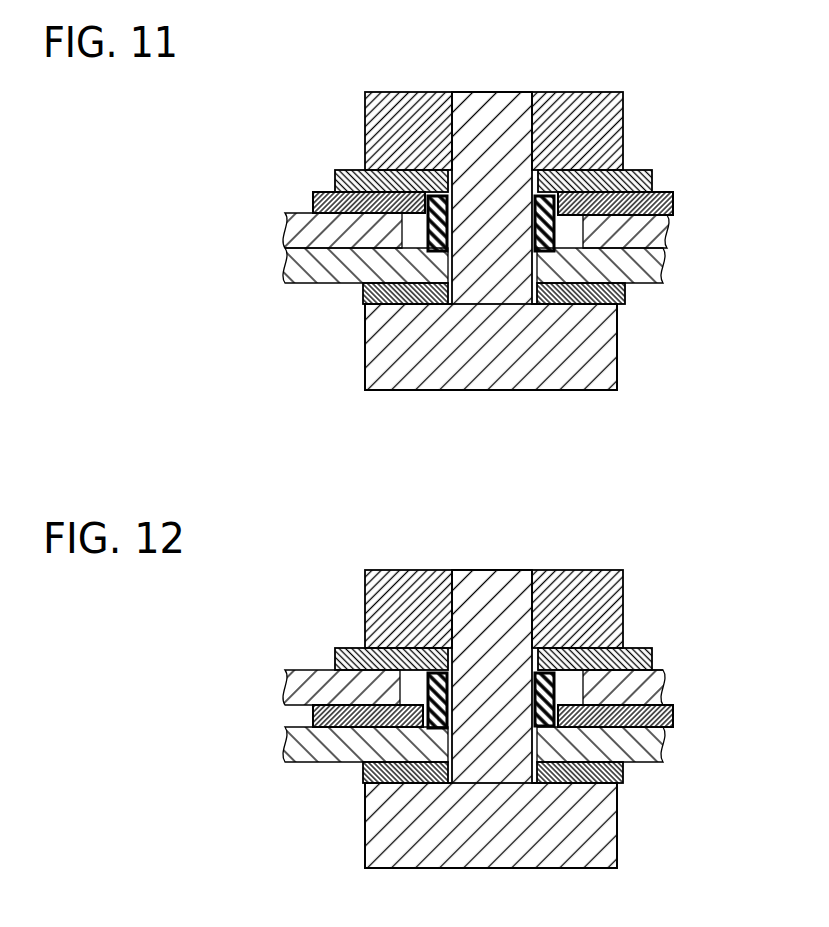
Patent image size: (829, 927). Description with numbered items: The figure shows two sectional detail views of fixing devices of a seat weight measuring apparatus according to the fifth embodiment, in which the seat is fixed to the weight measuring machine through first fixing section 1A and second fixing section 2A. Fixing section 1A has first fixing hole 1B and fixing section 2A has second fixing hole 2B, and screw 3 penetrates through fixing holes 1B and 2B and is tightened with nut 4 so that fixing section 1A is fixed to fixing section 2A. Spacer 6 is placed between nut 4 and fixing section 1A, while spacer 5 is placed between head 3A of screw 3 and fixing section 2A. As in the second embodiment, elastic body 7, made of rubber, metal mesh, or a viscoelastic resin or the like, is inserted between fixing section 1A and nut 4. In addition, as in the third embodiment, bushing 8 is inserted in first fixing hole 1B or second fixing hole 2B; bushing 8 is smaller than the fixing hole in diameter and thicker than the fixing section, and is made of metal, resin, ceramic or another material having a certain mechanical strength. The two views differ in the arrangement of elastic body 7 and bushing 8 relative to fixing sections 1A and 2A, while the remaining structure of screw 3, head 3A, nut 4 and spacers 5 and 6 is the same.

In FIG. 11, the first fixing section 1A is at (297, 240).
In FIG. 12, the first fixing section 1A is at (341, 661).
In FIG. 11, the first fixing hole 1B is at (568, 228).
In FIG. 12, the first fixing hole 1B is at (649, 685).
In FIG. 11, the second fixing section 2A is at (333, 262).
In FIG. 12, the second fixing section 2A is at (323, 749).
In FIG. 11, the second fixing hole 2B is at (540, 265).
In FIG. 12, the second fixing hole 2B is at (638, 751).
In FIG. 11, the screw 3 is at (410, 372).
In FIG. 12, the screw 3 is at (491, 743).
In FIG. 11, the head 3A is at (600, 342).
In FIG. 12, the head 3A is at (530, 825).
In FIG. 11, the nut 4 is at (600, 120).
In FIG. 12, the nut 4 is at (535, 609).
In FIG. 11, the spacer 5 is at (625, 302).
In FIG. 12, the spacer 5 is at (612, 782).
In FIG. 11, the spacer 6 is at (650, 171).
In FIG. 12, the spacer 6 is at (538, 650).
In FIG. 11, the elastic body 7 is at (322, 192).
In FIG. 12, the elastic body 7 is at (330, 707).
In FIG. 11, the bushing 8 is at (363, 287).
In FIG. 12, the bushing 8 is at (380, 788).